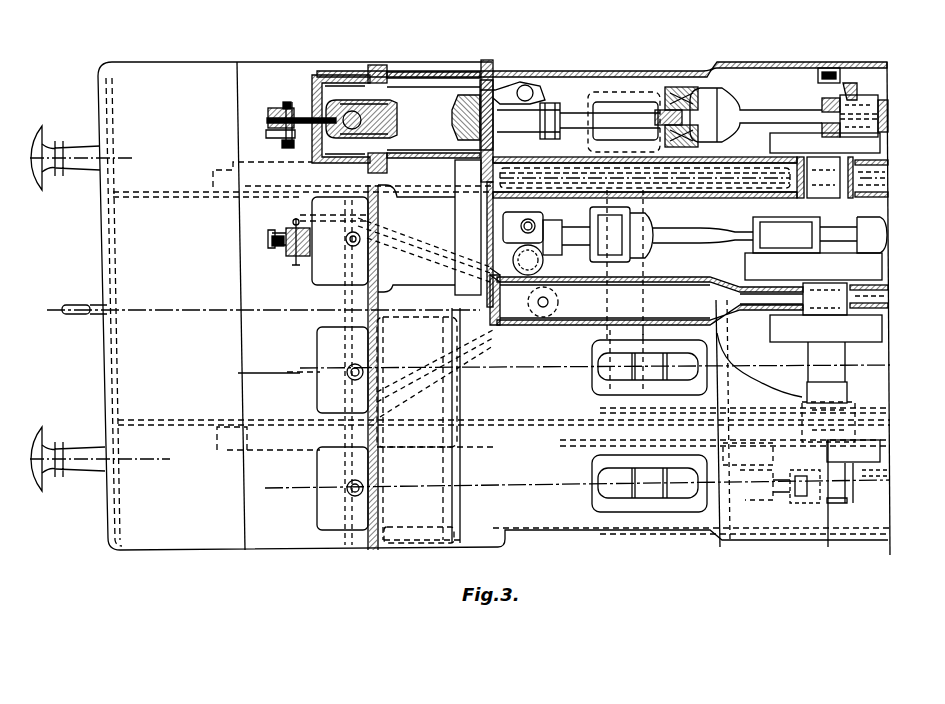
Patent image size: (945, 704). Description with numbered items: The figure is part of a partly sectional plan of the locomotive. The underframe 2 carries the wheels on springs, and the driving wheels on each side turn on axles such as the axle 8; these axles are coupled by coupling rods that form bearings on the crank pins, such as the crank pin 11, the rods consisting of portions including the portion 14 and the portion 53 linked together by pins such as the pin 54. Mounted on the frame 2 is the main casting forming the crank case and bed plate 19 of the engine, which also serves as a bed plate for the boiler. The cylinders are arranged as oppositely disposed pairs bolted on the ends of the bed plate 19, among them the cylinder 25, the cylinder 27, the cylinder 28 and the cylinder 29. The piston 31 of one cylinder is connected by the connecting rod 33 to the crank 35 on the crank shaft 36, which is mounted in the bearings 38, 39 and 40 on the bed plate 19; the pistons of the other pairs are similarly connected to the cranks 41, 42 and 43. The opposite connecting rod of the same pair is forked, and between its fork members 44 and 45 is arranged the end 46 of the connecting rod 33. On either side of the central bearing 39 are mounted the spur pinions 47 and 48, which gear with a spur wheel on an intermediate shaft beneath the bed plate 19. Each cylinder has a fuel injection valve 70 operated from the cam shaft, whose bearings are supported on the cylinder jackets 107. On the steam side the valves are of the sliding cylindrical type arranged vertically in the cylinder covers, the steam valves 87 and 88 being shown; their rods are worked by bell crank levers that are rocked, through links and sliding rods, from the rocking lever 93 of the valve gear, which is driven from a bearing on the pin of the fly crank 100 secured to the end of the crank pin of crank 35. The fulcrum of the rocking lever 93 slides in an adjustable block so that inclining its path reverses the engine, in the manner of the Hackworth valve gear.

The underframe 2 is at (338, 195).
The axle 8 is at (615, 287).
The crank pin 11 is at (600, 480).
The coupling rod portion 14 is at (775, 480).
The bed plate 19 is at (742, 69).
The cylinder 25 is at (421, 275).
The cylinder 27 is at (424, 410).
The cylinder 28 is at (448, 87).
The cylinder 29 is at (406, 540).
The piston 31 is at (568, 114).
The connecting rod 33 is at (744, 118).
The crank 35 is at (858, 95).
The crank shaft 36 is at (832, 170).
The bearing 38 is at (888, 172).
The central bearing 39 is at (845, 290).
The bearing 40 is at (842, 418).
The crank 41 is at (800, 250).
The crank 42 is at (815, 350).
The crank 43 is at (838, 500).
The fork member 44 is at (822, 103).
The fork member 45 is at (822, 130).
The connecting rod end 46 is at (897, 117).
The spur pinion 47 is at (882, 284).
The spur pinion 48 is at (862, 342).
The coupling rod portion 53 is at (868, 476).
The pin 54 is at (800, 493).
The fuel injection valve 70 is at (302, 112).
The steam valve 87 is at (528, 85).
The steam valve 88 is at (542, 260).
The rocking lever 93 is at (831, 59).
The fly crank 100 is at (850, 82).
The cylinder jacket 107 is at (412, 80).